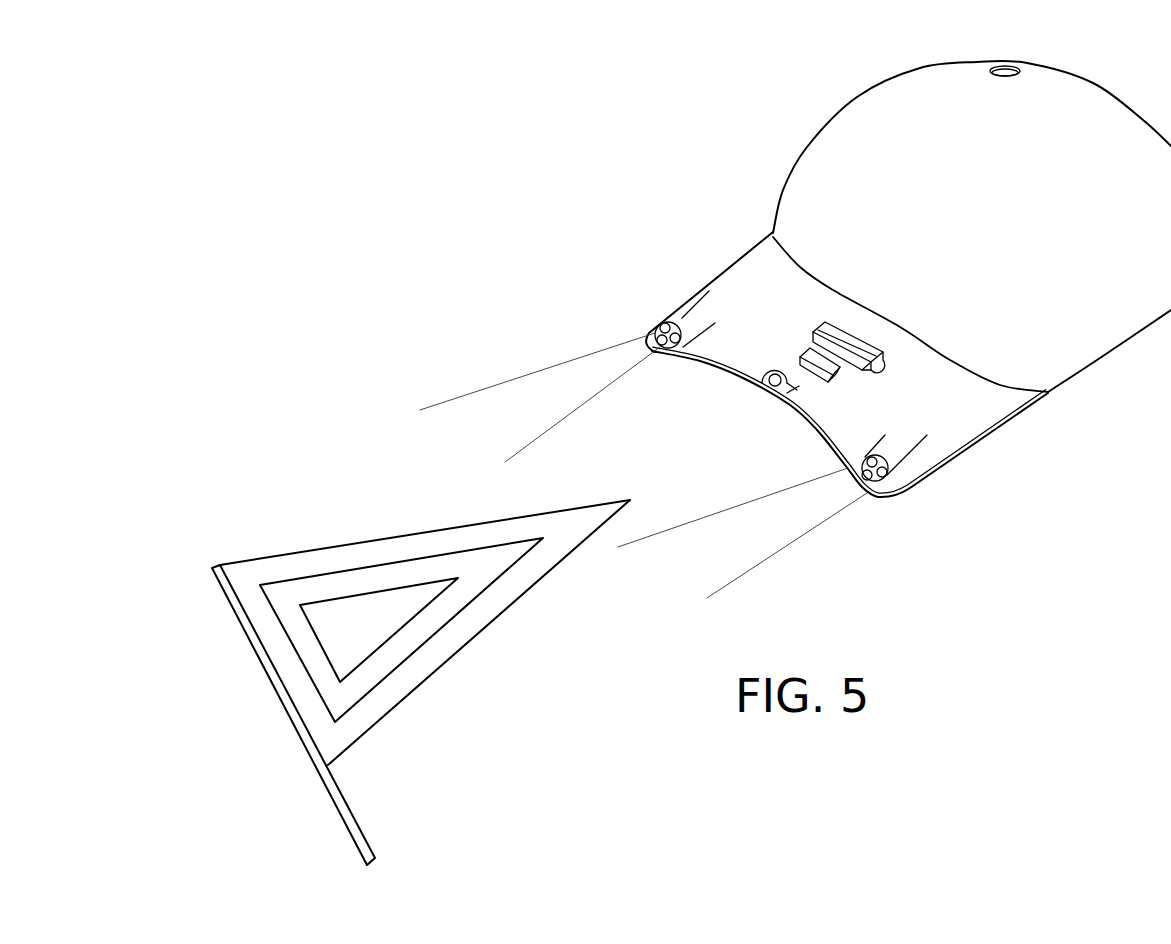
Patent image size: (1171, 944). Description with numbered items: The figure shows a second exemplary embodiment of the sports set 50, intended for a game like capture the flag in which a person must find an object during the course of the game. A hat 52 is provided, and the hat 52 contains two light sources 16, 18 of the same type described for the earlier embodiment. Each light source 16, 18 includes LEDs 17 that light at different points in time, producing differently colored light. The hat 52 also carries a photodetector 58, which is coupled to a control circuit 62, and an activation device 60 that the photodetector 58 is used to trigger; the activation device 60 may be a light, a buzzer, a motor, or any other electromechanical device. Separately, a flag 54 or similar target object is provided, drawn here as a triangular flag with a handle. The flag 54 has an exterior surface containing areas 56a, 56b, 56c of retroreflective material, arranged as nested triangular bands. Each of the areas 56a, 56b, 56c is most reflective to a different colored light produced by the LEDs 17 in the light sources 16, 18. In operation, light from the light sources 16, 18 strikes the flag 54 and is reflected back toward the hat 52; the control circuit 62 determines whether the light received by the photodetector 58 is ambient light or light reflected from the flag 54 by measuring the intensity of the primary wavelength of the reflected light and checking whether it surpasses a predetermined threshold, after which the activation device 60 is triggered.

The sports set 50 is at (490, 318).
The hat 52 is at (807, 148).
The activation device 60 is at (1003, 77).
The light source 16 is at (700, 314).
The LEDs 17 is at (656, 328).
The light source 18 is at (893, 447).
The photodetector 58 is at (770, 388).
The control circuit 62 is at (815, 368).
The flag 54 is at (319, 548).
The area of retroreflective material 56a is at (478, 535).
The area of retroreflective material 56b is at (473, 578).
The area of retroreflective material 56c is at (377, 617).